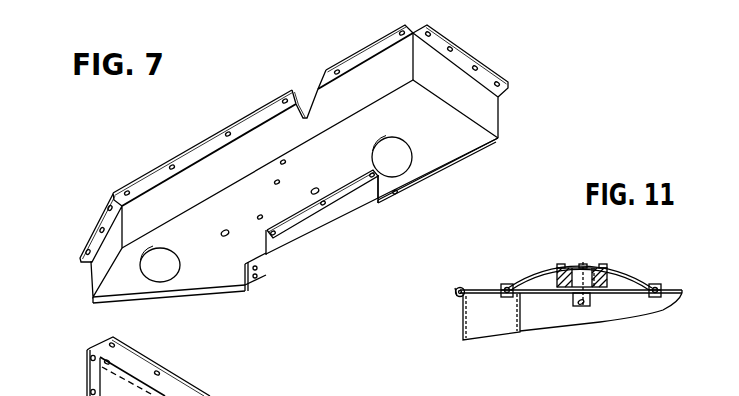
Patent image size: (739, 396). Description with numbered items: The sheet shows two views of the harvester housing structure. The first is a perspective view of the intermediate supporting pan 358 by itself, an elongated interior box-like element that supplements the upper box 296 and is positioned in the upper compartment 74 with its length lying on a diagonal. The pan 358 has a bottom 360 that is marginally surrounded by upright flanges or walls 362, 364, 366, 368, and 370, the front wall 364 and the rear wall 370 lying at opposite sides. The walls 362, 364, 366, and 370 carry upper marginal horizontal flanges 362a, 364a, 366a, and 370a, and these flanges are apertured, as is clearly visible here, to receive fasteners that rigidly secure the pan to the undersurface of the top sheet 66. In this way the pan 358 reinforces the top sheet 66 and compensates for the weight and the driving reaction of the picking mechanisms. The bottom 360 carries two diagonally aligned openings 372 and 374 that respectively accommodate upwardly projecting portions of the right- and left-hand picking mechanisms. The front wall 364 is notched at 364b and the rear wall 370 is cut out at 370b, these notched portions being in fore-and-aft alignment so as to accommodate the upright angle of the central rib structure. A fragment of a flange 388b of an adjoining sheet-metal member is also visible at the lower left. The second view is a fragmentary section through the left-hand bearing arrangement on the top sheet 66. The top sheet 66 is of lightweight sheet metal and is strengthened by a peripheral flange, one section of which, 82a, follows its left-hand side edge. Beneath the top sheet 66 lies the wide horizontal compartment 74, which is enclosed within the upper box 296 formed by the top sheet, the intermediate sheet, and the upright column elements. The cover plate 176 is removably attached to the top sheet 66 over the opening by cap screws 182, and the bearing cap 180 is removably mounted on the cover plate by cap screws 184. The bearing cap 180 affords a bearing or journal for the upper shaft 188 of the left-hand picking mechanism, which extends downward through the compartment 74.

In FIG. 7, the supporting pan 358 is at (184, 142).
In FIG. 11, the supporting pan 358 is at (514, 327).
In FIG. 7, the bottom 360 is at (452, 148).
In FIG. 7, the wall 362 is at (494, 106).
In FIG. 7, the upper marginal horizontal flange 362a is at (464, 54).
In FIG. 7, the front wall 364 is at (362, 77).
In FIG. 7, the upper marginal horizontal flange 364a is at (253, 117).
In FIG. 7, the notch 364b is at (312, 98).
In FIG. 7, the wall 366 is at (117, 223).
In FIG. 7, the upper marginal horizontal flange 366a is at (88, 242).
In FIG. 7, the wall 368 is at (203, 288).
In FIG. 7, the rear wall 370 is at (329, 228).
In FIG. 7, the upper marginal horizontal flange 370a is at (296, 228).
In FIG. 7, the cutout 370b is at (393, 188).
In FIG. 7, the opening 372 is at (398, 130).
In FIG. 7, the opening 374 is at (182, 239).
In FIG. 7, the flange 388b is at (87, 379).
In FIG. 11, the top sheet 66 is at (483, 290).
In FIG. 11, the horizontal compartment 74 is at (498, 328).
In FIG. 11, the peripheral flange section 82a is at (460, 289).
In FIG. 11, the top cover plate 176 is at (540, 271).
In FIG. 11, the bearing cap 180 is at (586, 266).
In FIG. 11, the cap screws 182 is at (507, 283).
In FIG. 11, the cap screws 184 is at (561, 263).
In FIG. 11, the shaft 188 is at (587, 304).
In FIG. 11, the upper box 296 is at (459, 330).